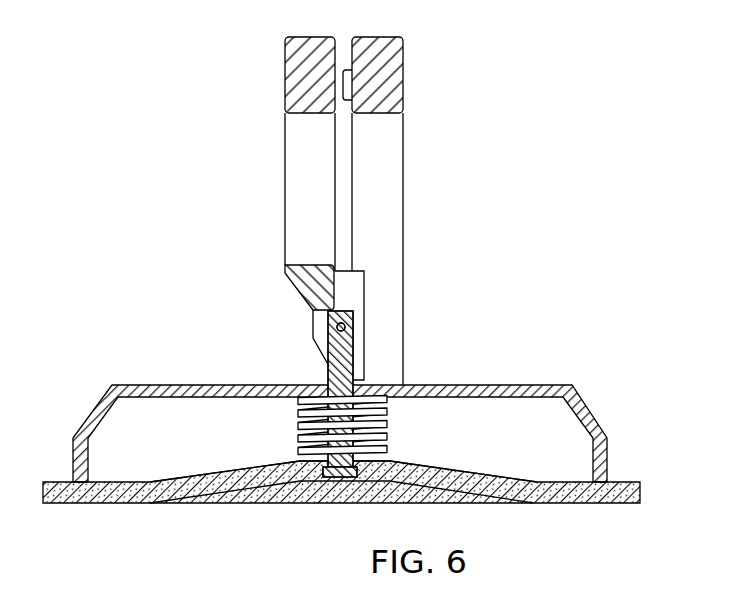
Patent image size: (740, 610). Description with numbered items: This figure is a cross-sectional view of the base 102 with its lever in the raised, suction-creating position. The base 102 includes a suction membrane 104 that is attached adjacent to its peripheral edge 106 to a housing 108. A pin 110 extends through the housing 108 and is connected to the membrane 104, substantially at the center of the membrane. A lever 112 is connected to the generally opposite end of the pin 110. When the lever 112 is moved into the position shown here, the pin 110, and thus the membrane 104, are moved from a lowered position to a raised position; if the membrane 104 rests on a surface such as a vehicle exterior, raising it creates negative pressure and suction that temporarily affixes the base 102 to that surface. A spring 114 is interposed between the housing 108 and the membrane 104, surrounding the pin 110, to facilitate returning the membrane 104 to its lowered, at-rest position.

The base 102 is at (455, 297).
The suction membrane 104 is at (188, 493).
The peripheral edge 106 is at (607, 497).
The housing 108 is at (563, 385).
The pin 110 is at (329, 367).
The lever 112 is at (292, 75).
The spring 114 is at (300, 430).